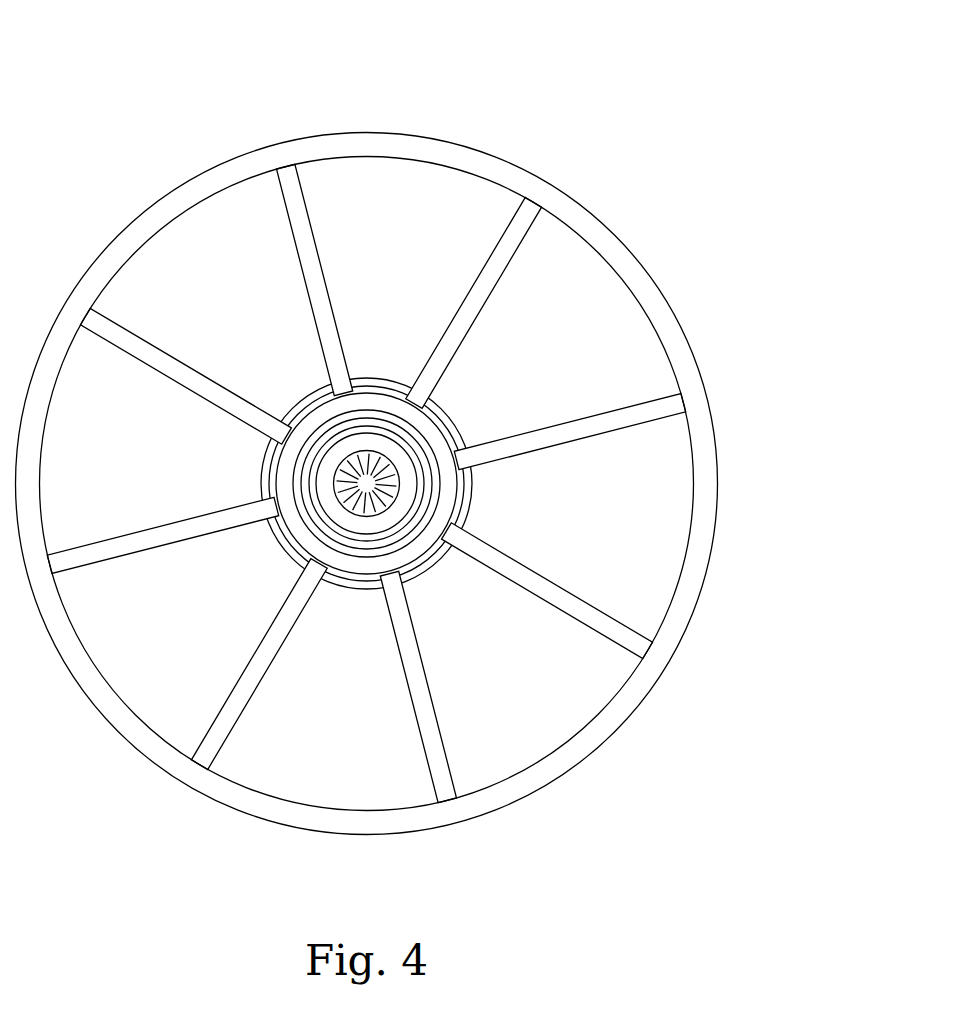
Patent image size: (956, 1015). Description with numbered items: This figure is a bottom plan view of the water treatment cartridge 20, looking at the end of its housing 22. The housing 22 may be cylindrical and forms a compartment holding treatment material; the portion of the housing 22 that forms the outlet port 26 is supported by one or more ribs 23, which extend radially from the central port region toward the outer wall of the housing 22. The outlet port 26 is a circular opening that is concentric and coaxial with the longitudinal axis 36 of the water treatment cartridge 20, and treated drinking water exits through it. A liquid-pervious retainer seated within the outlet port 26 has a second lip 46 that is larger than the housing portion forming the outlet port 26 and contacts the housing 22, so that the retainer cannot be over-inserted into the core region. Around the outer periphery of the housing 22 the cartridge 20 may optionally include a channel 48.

The water treatment cartridge 20 is at (414, 441).
The housing 22 is at (638, 473).
The ribs 23 is at (613, 627).
The outlet port 26 is at (357, 460).
The longitudinal axis 36 is at (393, 460).
The second lip 46 is at (397, 513).
The channel 48 is at (708, 492).